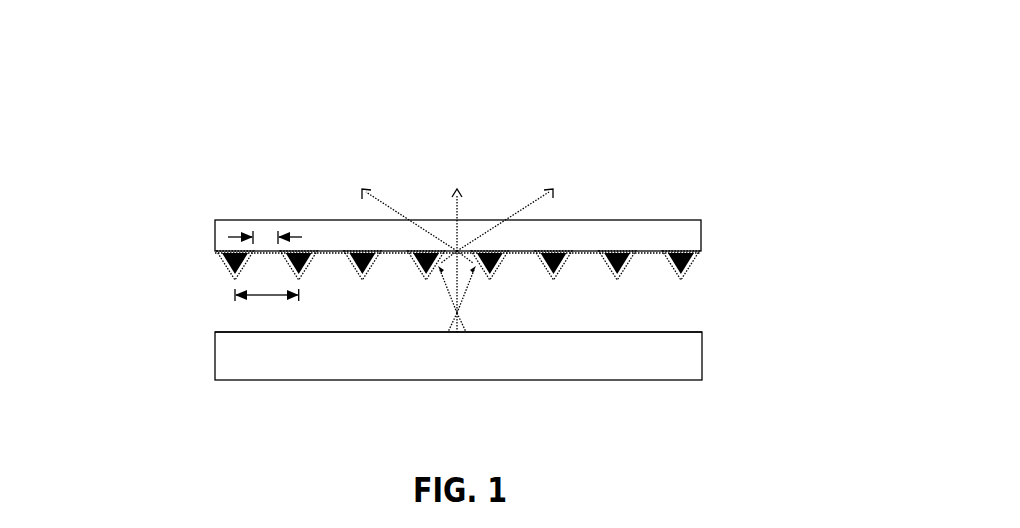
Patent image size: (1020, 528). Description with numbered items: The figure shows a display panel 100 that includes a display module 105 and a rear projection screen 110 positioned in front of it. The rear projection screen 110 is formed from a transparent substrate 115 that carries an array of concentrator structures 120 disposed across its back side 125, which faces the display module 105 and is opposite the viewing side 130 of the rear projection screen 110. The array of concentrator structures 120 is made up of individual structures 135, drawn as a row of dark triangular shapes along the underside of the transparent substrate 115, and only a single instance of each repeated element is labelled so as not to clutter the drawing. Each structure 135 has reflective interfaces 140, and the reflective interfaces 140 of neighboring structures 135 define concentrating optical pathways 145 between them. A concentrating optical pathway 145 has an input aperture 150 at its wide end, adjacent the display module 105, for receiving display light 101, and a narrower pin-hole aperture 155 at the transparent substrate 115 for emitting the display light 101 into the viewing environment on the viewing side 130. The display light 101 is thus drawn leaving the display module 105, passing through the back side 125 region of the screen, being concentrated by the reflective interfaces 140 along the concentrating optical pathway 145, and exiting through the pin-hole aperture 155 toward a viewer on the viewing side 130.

The display panel 100 is at (209, 84).
The display light 101 is at (459, 212).
The display module 105 is at (543, 363).
The rear projection screen 110 is at (713, 330).
The transparent substrate 115 is at (688, 246).
The array of concentrator structures 120 is at (212, 267).
The back side 125 is at (583, 320).
The viewing side 130 is at (618, 166).
The structure 135 is at (357, 251).
The reflective interface 140 is at (419, 280).
The concentrating optical pathway 145 is at (333, 289).
The input aperture 150 is at (236, 297).
The pin-hole aperture 155 is at (245, 232).